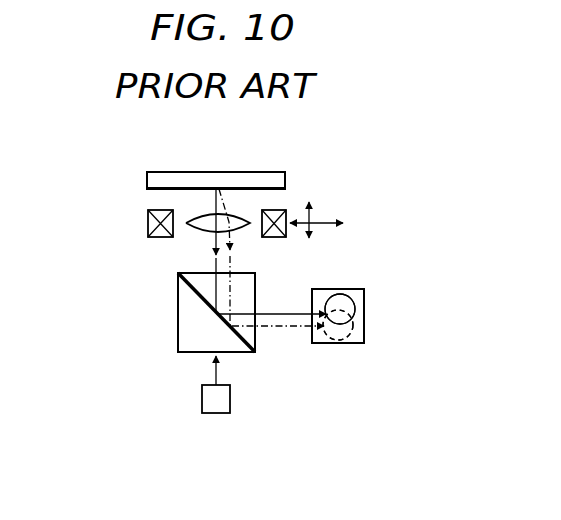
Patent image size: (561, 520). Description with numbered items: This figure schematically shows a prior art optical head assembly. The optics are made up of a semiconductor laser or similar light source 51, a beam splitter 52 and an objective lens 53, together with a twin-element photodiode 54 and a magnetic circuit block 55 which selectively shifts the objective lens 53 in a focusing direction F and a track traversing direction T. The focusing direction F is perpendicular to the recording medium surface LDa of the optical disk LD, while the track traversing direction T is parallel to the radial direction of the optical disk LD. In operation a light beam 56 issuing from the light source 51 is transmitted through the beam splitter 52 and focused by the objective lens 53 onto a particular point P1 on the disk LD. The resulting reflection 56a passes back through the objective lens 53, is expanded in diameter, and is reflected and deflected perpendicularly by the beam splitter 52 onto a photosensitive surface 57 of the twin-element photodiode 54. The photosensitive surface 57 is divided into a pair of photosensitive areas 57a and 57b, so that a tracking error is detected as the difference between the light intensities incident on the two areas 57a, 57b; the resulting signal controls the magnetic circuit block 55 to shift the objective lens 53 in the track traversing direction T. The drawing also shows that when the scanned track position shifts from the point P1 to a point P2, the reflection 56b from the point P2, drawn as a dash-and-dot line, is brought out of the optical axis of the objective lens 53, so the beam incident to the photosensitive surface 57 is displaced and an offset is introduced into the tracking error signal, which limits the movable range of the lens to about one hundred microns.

The optical disk LD is at (279, 172).
The recording medium surface LDa is at (147, 188).
The point P1 is at (218, 189).
The point P2 is at (219, 189).
The light source 51 is at (202, 406).
The beam splitter 52 is at (178, 316).
The objective lens 53 is at (190, 230).
The twin-element photodiode 54 is at (372, 284).
The magnetic circuit block 55 is at (148, 222).
The light beam 56 is at (216, 378).
The reflection 56a is at (292, 313).
The reflection 56b is at (295, 330).
The photosensitive surface 57 is at (338, 286).
The photosensitive area 57a is at (365, 306).
The photosensitive area 57b is at (365, 337).
The focusing direction F is at (308, 206).
The track traversing direction T is at (327, 224).